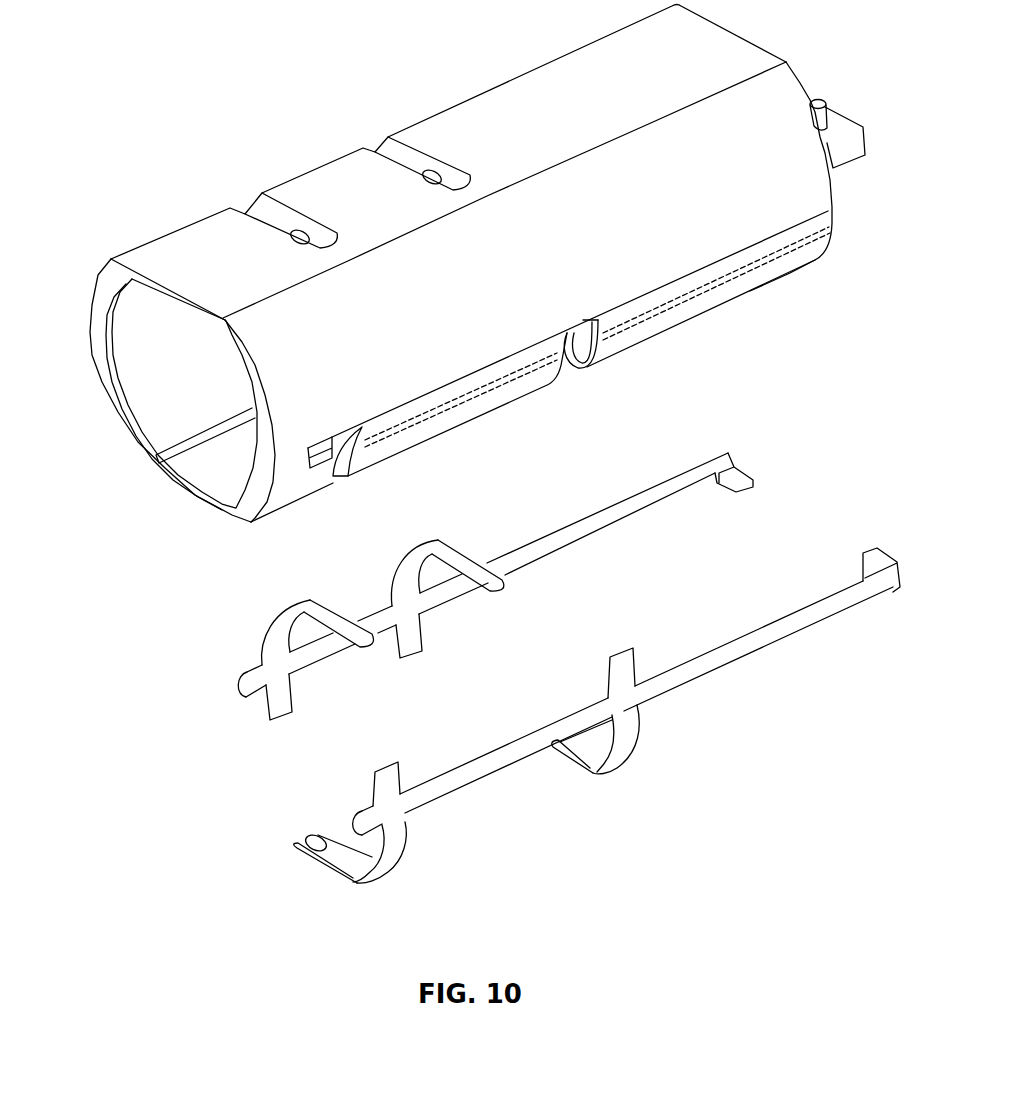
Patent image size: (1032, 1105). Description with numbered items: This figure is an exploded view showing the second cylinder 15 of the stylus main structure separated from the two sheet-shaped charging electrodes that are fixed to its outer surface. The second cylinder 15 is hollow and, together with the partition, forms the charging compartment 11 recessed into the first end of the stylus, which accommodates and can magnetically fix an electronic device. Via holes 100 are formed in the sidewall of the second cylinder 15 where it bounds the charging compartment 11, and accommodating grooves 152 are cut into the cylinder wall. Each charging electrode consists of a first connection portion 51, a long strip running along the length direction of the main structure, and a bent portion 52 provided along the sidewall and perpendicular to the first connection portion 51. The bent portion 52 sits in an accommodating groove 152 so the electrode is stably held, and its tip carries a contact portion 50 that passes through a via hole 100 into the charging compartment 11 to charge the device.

The second cylinder 15 is at (588, 92).
The via hole 100 is at (300, 237).
The charging compartment 11 is at (178, 340).
The accommodating groove 152 is at (582, 336).
The first connection portion 51 is at (651, 498).
The bent portion 52 is at (323, 615).
The contact portion 50 is at (312, 841).